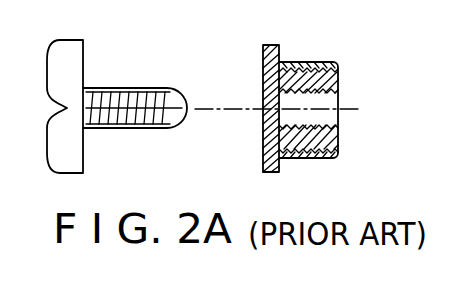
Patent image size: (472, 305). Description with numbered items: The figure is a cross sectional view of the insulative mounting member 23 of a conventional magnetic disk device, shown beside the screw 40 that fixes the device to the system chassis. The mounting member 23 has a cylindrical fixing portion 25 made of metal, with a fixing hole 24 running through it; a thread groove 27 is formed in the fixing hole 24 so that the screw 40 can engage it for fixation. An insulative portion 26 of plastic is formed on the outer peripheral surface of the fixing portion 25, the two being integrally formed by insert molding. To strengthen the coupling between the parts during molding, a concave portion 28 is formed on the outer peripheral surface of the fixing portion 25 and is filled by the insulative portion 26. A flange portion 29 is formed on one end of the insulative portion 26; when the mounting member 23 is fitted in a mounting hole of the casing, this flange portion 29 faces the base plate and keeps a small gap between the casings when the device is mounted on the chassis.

The screw 40 is at (75, 60).
The mounting member 23 is at (306, 102).
The fixing hole 24 is at (337, 98).
The fixing portion 25 is at (337, 138).
The insulative portion 26 is at (311, 61).
The thread groove 27 is at (271, 125).
The concave portion 28 is at (297, 158).
The flange portion 29 is at (270, 46).